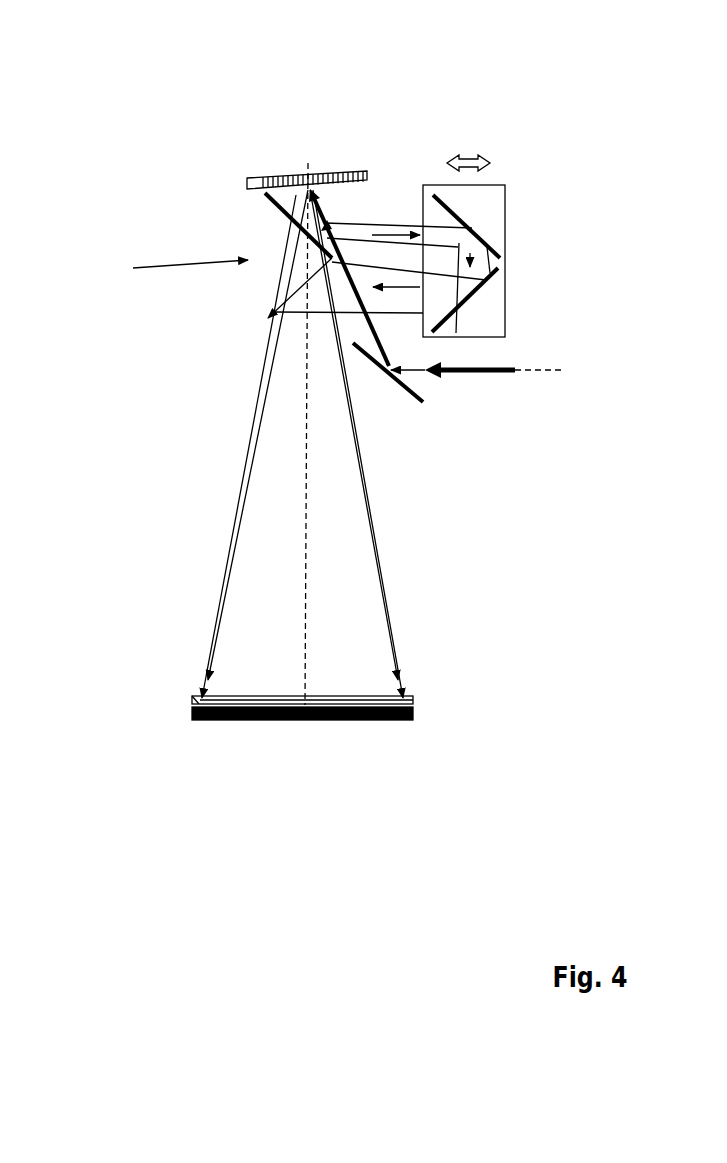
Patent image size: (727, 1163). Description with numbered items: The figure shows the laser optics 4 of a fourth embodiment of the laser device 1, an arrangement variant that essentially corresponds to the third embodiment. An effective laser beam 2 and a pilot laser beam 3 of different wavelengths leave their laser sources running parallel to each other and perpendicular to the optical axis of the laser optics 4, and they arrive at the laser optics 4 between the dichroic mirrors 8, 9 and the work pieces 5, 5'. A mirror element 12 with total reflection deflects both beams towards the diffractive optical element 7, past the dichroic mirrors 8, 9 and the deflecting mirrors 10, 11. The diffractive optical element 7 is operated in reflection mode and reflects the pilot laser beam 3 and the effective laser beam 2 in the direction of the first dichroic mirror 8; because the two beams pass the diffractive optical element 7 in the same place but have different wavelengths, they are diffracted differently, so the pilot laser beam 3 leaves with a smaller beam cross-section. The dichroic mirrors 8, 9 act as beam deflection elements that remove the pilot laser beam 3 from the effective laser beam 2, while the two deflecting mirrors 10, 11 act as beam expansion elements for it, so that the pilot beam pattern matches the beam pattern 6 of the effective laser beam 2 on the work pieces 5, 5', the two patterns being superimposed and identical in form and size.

The laser device 1 is at (122, 98).
The effective laser beam 2 is at (262, 363).
The pilot laser beam 3 is at (242, 470).
The laser optics 4 is at (172, 268).
The work piece 5 is at (296, 753).
The work piece 5' is at (146, 711).
The beam pattern 6 is at (327, 647).
The diffractive optical element 7 is at (278, 177).
The first dichroic mirror 8 is at (280, 212).
The second dichroic mirror 9 is at (265, 317).
The deflecting mirror 10 is at (481, 231).
The deflecting mirror 11 is at (494, 280).
The mirror element 12 is at (396, 382).